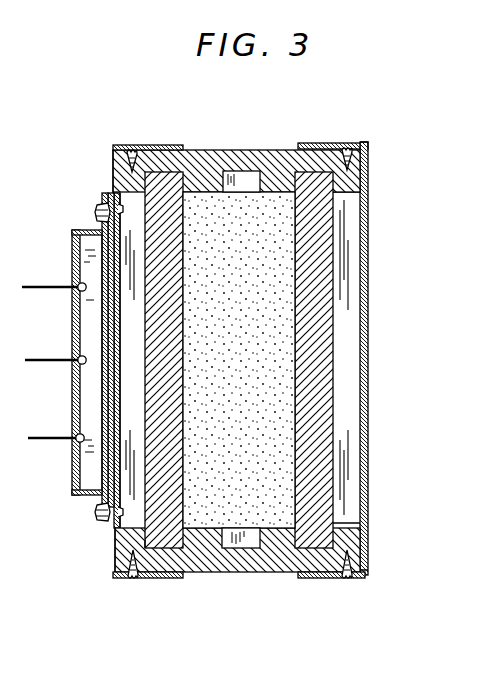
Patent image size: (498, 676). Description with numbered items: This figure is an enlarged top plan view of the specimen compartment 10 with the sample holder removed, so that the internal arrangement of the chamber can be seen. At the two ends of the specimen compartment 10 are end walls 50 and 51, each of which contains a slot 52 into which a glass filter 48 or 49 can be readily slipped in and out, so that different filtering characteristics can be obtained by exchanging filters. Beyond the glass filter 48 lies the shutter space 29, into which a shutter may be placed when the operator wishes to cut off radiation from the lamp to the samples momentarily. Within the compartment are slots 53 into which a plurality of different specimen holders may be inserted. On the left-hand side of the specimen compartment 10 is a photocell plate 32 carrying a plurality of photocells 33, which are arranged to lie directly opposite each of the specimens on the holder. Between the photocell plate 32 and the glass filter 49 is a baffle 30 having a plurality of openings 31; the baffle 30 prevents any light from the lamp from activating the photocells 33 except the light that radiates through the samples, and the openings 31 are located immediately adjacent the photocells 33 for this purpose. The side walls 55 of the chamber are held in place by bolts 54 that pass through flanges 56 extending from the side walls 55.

The specimen compartment 10 is at (283, 468).
The shutter space 29 is at (369, 384).
The baffle 30 is at (107, 342).
The openings 31 is at (106, 303).
The photocell plate 32 is at (72, 398).
The photocells 33 is at (77, 285).
The glass filter 48 is at (297, 548).
The glass filter 49 is at (165, 548).
The end wall 50 is at (262, 150).
The end wall 51 is at (233, 570).
The slots 52 is at (188, 170).
The slots 53 is at (250, 170).
The bolts 54 is at (132, 150).
The side walls 55 is at (113, 180).
The flanges 56 is at (145, 148).